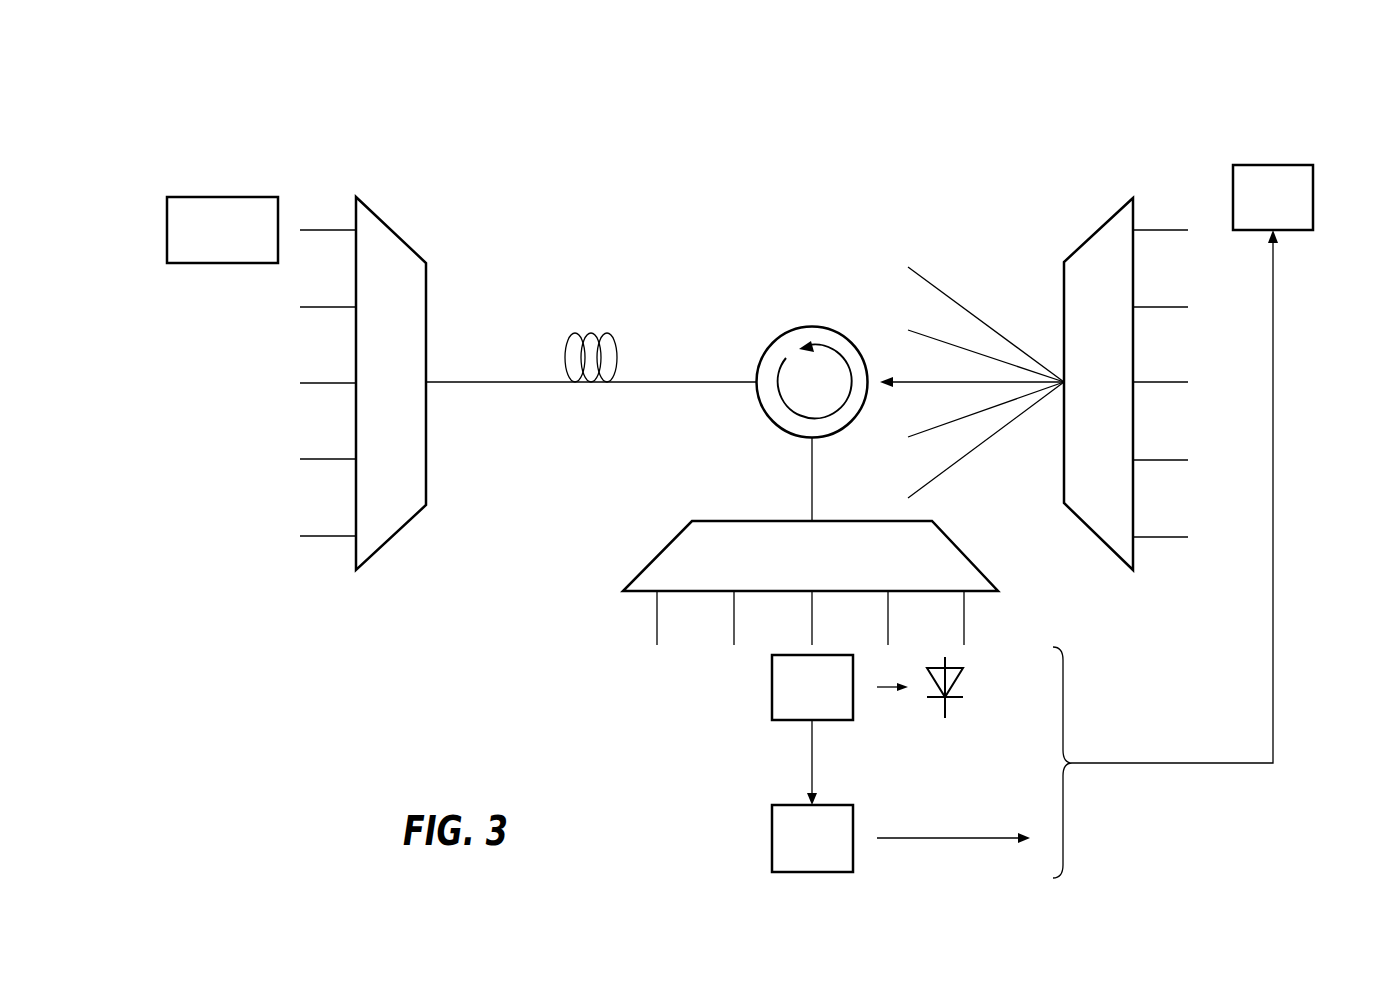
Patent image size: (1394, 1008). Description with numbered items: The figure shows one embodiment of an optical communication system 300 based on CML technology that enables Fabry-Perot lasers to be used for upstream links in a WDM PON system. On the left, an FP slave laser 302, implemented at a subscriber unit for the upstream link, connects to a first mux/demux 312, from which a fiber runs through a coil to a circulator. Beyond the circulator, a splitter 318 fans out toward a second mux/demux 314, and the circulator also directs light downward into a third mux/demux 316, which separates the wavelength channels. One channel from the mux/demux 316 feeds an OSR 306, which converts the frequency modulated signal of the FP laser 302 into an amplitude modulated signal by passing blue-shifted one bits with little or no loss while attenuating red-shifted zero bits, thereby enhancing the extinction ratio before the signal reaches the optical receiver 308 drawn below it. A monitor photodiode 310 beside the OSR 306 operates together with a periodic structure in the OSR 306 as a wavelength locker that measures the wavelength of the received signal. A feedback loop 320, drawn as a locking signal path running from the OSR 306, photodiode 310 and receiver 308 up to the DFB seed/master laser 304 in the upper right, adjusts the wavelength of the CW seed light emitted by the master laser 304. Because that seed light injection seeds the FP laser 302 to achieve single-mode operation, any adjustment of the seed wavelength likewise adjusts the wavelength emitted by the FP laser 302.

The optical communication system 300 is at (450, 95).
The FP slave laser 302 is at (240, 256).
The DFB seed/master laser 304 is at (1290, 224).
The OSR 306 is at (830, 714).
The optical receiver 308 is at (830, 864).
The monitor photodiode 310 is at (953, 685).
The mux/demux 312 is at (410, 396).
The mux/demux 314 is at (1117, 396).
The mux/demux 316 is at (830, 571).
The splitter 318 is at (952, 262).
The feedback loop 320 is at (1290, 500).